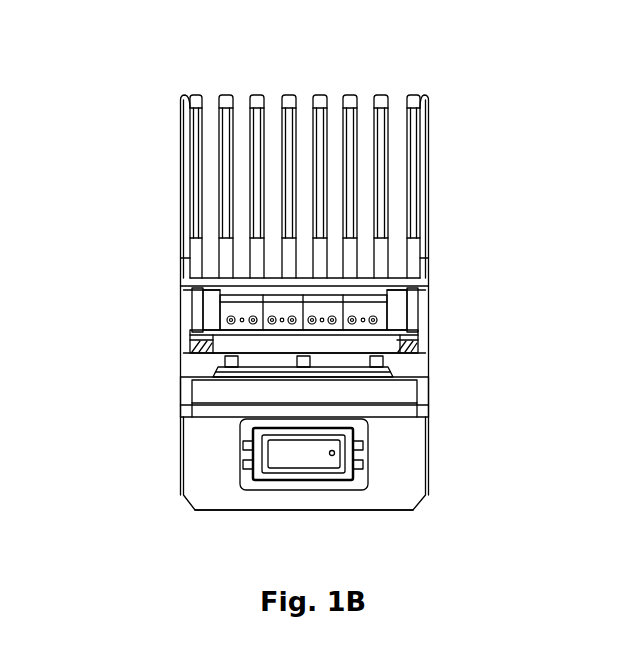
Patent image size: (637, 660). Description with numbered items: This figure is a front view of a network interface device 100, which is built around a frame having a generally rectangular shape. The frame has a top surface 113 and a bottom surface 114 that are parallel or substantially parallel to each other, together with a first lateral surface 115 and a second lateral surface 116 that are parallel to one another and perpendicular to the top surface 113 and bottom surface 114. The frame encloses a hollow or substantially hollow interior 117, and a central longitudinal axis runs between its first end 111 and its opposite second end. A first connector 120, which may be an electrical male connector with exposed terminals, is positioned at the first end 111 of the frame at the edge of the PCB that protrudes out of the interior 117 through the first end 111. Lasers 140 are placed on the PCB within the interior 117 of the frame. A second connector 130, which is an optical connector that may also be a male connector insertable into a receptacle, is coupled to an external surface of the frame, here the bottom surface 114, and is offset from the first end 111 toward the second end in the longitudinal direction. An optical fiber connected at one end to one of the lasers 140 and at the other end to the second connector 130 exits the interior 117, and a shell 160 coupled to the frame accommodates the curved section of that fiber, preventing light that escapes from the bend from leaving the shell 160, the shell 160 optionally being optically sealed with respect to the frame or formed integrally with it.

The network interface device 100 is at (103, 76).
The top surface 113 is at (308, 277).
The hollow interior 117 is at (212, 302).
The lasers 140 is at (370, 308).
The first connector 120 is at (218, 331).
The first lateral surface 115 is at (427, 368).
The first end 111 is at (413, 367).
The second lateral surface 116 is at (181, 395).
The bottom surface 114 is at (387, 417).
The second connector 130 is at (287, 455).
The shell 160 is at (313, 498).